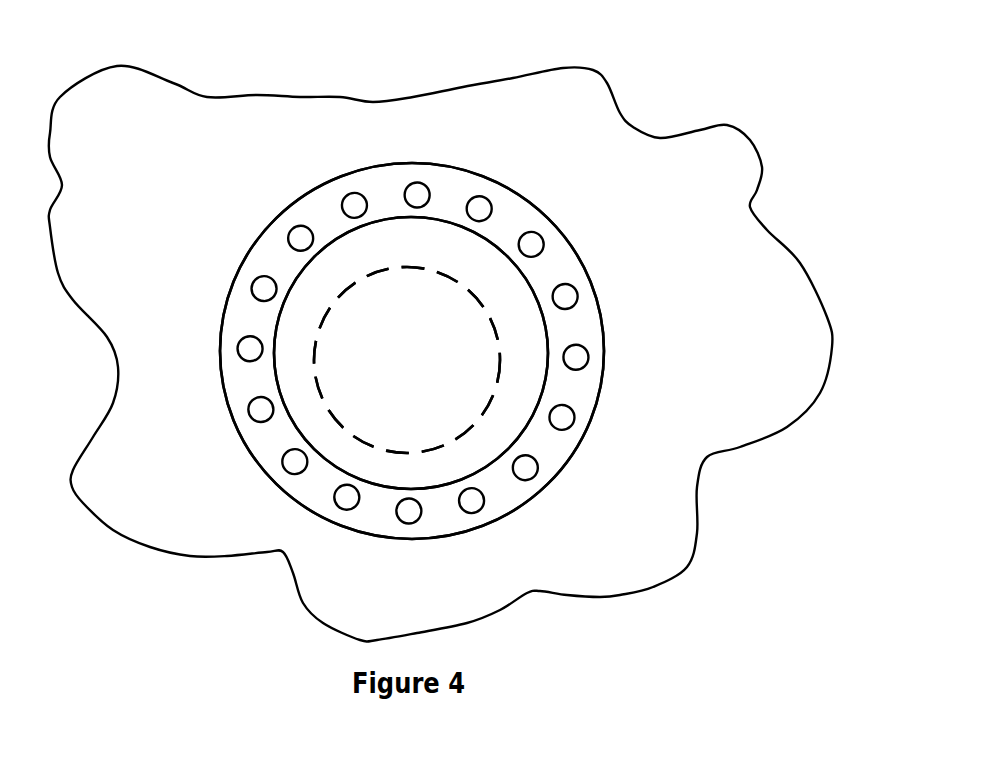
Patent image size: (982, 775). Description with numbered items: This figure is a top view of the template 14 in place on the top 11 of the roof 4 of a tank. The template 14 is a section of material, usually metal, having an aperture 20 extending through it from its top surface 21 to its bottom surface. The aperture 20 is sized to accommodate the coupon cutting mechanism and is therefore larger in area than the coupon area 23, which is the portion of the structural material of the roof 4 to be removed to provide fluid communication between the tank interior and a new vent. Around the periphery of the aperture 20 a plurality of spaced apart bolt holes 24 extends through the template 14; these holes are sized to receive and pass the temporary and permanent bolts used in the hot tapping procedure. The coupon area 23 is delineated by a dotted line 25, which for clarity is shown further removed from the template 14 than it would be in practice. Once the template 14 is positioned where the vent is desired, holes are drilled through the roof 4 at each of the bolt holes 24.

The roof 4 is at (456, 354).
The top of roof 11 is at (643, 170).
The template 14 is at (250, 452).
The aperture 20 is at (445, 260).
The top surface 21 is at (558, 275).
The coupon area 23 is at (447, 333).
The bolt holes 24 is at (565, 412).
The dotted line 25 is at (317, 383).